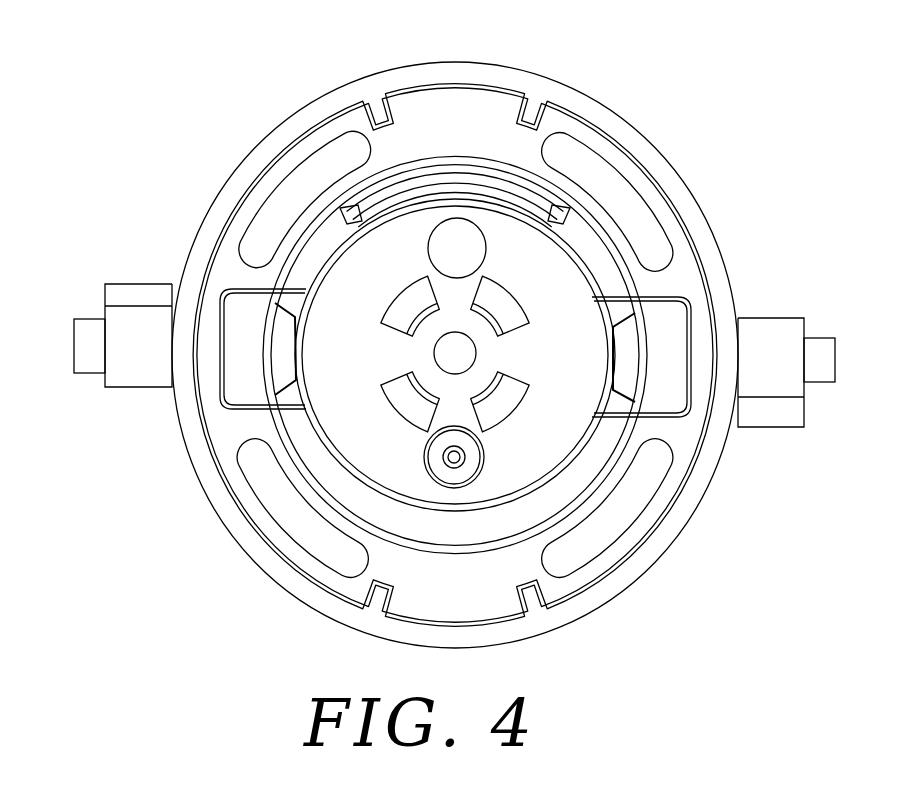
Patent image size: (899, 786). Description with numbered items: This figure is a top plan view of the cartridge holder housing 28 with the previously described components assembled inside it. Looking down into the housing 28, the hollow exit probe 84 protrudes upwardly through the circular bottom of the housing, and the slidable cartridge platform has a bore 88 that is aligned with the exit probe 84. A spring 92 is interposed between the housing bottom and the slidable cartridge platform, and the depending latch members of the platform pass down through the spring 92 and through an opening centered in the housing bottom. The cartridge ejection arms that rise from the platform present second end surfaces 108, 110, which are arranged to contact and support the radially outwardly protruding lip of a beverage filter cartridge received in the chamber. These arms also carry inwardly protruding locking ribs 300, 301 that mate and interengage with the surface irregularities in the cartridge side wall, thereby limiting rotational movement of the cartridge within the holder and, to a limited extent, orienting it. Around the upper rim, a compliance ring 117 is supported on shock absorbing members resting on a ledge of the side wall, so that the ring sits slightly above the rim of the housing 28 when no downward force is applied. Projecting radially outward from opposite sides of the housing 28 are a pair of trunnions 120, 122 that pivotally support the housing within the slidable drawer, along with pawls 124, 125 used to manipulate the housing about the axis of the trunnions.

The housing 28 is at (790, 304).
The exit probe 84 is at (466, 462).
The bore 88 is at (424, 468).
The spring 92 is at (493, 320).
The second end surface 108 is at (248, 312).
The second end surface 110 is at (668, 340).
The compliance ring 117 is at (470, 115).
The trunnion 120 is at (85, 336).
The trunnion 122 is at (828, 363).
The pawl 124 is at (153, 373).
The pawl 125 is at (775, 412).
The locking rib 300 is at (300, 348).
The locking rib 301 is at (612, 362).